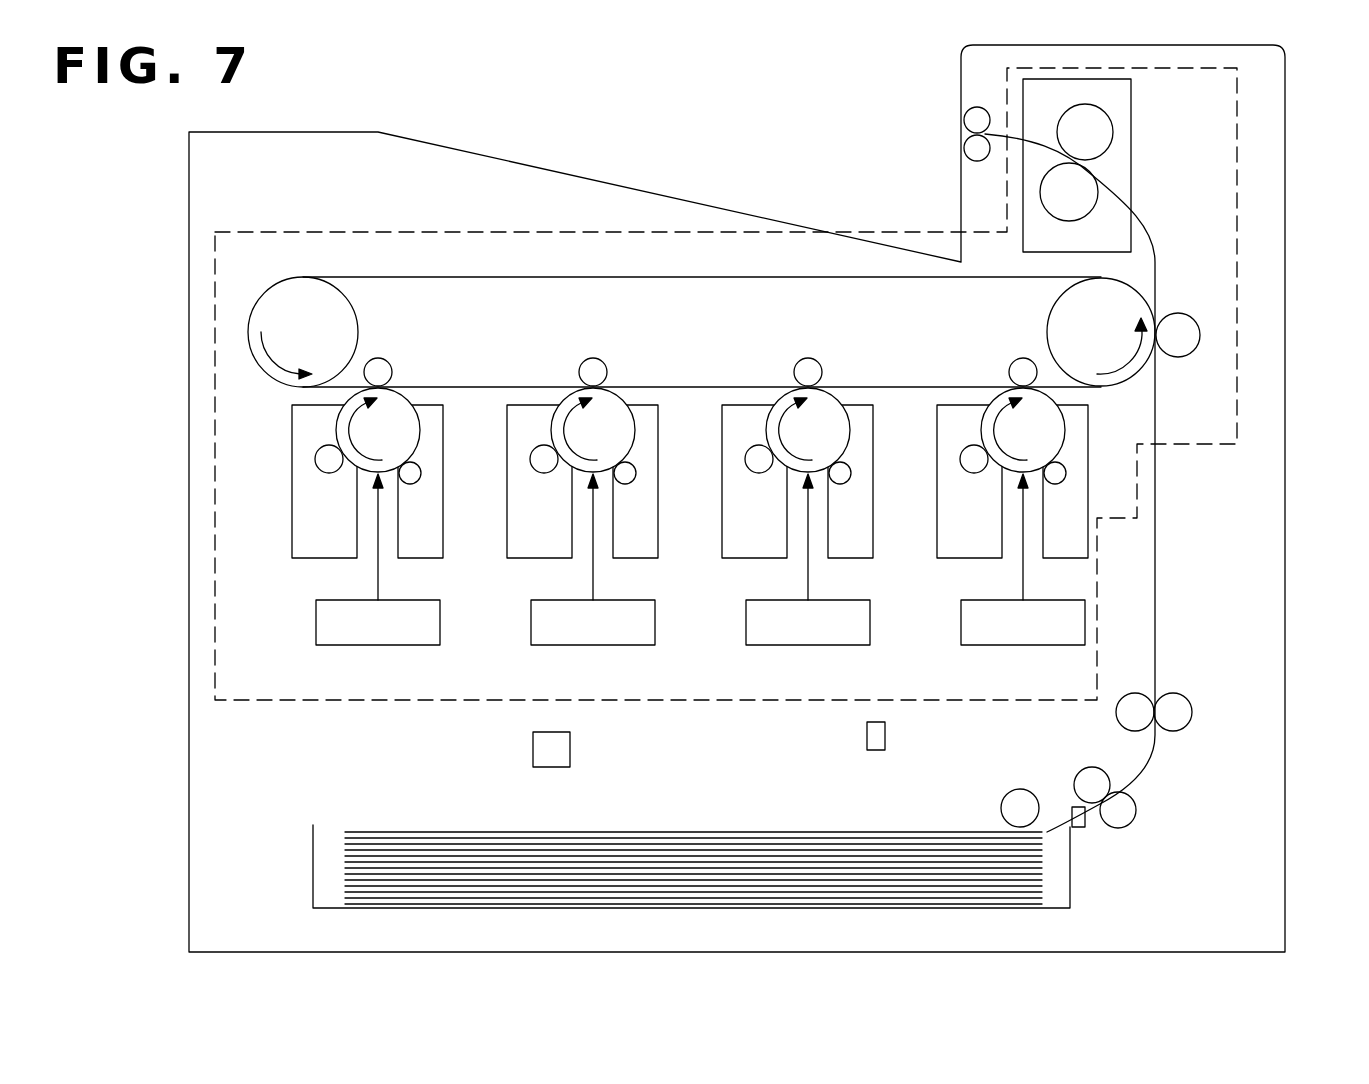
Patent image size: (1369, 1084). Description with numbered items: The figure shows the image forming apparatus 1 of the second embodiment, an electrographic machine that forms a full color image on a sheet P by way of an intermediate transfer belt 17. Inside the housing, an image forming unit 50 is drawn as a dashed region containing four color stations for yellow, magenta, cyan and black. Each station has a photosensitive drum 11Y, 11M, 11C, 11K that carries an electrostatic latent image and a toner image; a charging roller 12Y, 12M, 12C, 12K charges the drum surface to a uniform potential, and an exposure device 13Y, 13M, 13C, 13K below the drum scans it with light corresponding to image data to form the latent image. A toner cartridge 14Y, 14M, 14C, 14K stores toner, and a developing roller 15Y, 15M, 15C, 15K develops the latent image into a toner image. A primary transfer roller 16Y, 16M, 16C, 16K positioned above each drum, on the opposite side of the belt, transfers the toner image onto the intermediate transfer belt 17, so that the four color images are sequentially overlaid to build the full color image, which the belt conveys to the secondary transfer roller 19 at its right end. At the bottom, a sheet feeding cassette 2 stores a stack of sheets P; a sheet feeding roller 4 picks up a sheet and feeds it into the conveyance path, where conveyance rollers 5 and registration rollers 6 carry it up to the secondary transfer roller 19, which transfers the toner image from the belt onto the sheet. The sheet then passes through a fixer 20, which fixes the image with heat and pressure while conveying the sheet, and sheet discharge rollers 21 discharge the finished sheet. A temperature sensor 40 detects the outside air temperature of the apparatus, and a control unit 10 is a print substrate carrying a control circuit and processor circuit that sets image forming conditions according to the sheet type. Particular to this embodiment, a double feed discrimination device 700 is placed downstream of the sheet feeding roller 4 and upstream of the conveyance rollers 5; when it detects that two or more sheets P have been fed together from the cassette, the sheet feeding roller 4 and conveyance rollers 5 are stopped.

The image forming apparatus 1 is at (1285, 88).
The sheet feeding cassette 2 is at (1072, 890).
The sheet feeding roller 4 is at (1003, 800).
The conveyance rollers 5 is at (1140, 812).
The registration rollers 6 is at (1125, 728).
The control unit 10 is at (563, 768).
The temperature sensor 40 is at (876, 751).
The double feed discrimination device 700 is at (1087, 830).
The sheet P is at (715, 832).
The intermediate transfer belt 17 is at (538, 276).
The secondary transfer roller 19 is at (1172, 357).
The fixer 20 is at (1131, 137).
The sheet discharge rollers 21 is at (968, 108).
The image forming unit 50 is at (1237, 298).
The photosensitive drum 11Y is at (421, 430).
The photosensitive drum 11M is at (636, 432).
The photosensitive drum 11C is at (851, 432).
The photosensitive drum 11K is at (1066, 432).
The charging roller 12Y is at (420, 483).
The charging roller 12M is at (635, 483).
The charging roller 12C is at (850, 483).
The charging roller 12K is at (1066, 480).
The exposure device 13Y is at (388, 647).
The exposure device 13M is at (603, 647).
The exposure device 13C is at (818, 647).
The exposure device 13K is at (1031, 647).
The toner cartridge 14Y is at (330, 560).
The toner cartridge 14M is at (545, 560).
The toner cartridge 14C is at (760, 560).
The toner cartridge 14K is at (978, 560).
The developing roller 15Y is at (333, 474).
The developing roller 15M is at (548, 474).
The developing roller 15C is at (763, 474).
The developing roller 15K is at (978, 474).
The primary transfer roller 16Y is at (391, 361).
The primary transfer roller 16M is at (590, 359).
The primary transfer roller 16C is at (804, 359).
The primary transfer roller 16K is at (1013, 359).